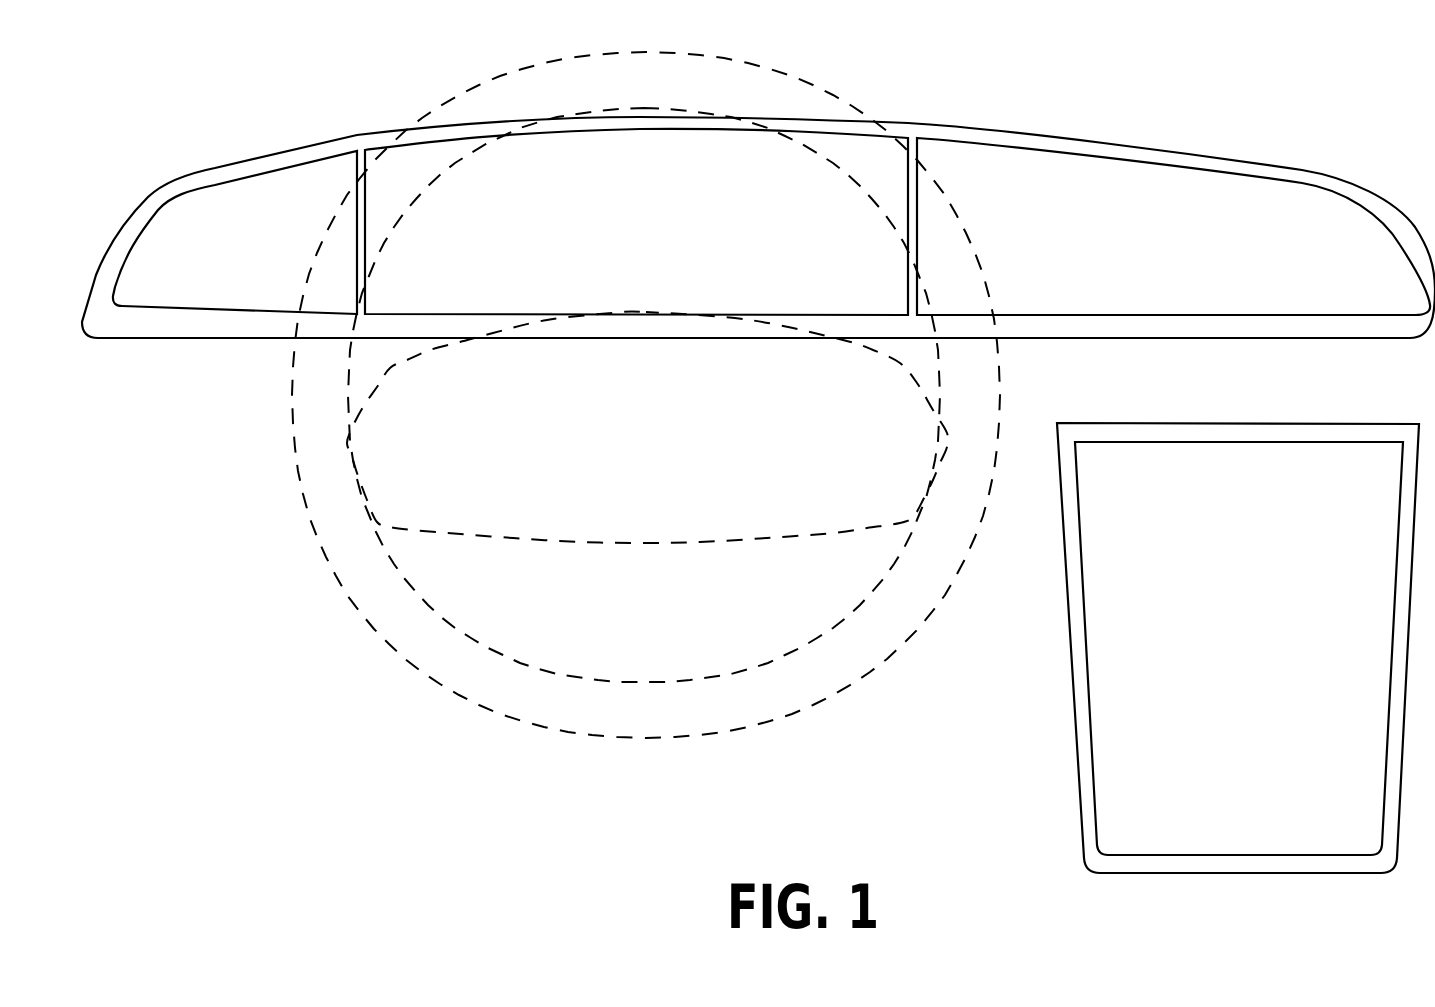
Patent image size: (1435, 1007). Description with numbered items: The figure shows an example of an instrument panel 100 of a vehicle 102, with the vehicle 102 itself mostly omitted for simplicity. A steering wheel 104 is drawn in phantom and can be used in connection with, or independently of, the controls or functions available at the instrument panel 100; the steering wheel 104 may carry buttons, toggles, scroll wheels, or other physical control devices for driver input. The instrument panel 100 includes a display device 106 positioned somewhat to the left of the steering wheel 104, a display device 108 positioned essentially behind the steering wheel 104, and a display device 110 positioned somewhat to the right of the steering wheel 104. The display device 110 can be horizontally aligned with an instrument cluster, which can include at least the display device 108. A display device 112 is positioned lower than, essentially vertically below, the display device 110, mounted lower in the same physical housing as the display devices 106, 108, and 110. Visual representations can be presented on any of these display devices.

The instrument panel 100 is at (1074, 92).
The vehicle 102 is at (1314, 72).
The steering wheel 104 is at (624, 717).
The display device 106 is at (217, 249).
The display device 108 is at (616, 249).
The display device 110 is at (1159, 254).
The display device 112 is at (1231, 701).